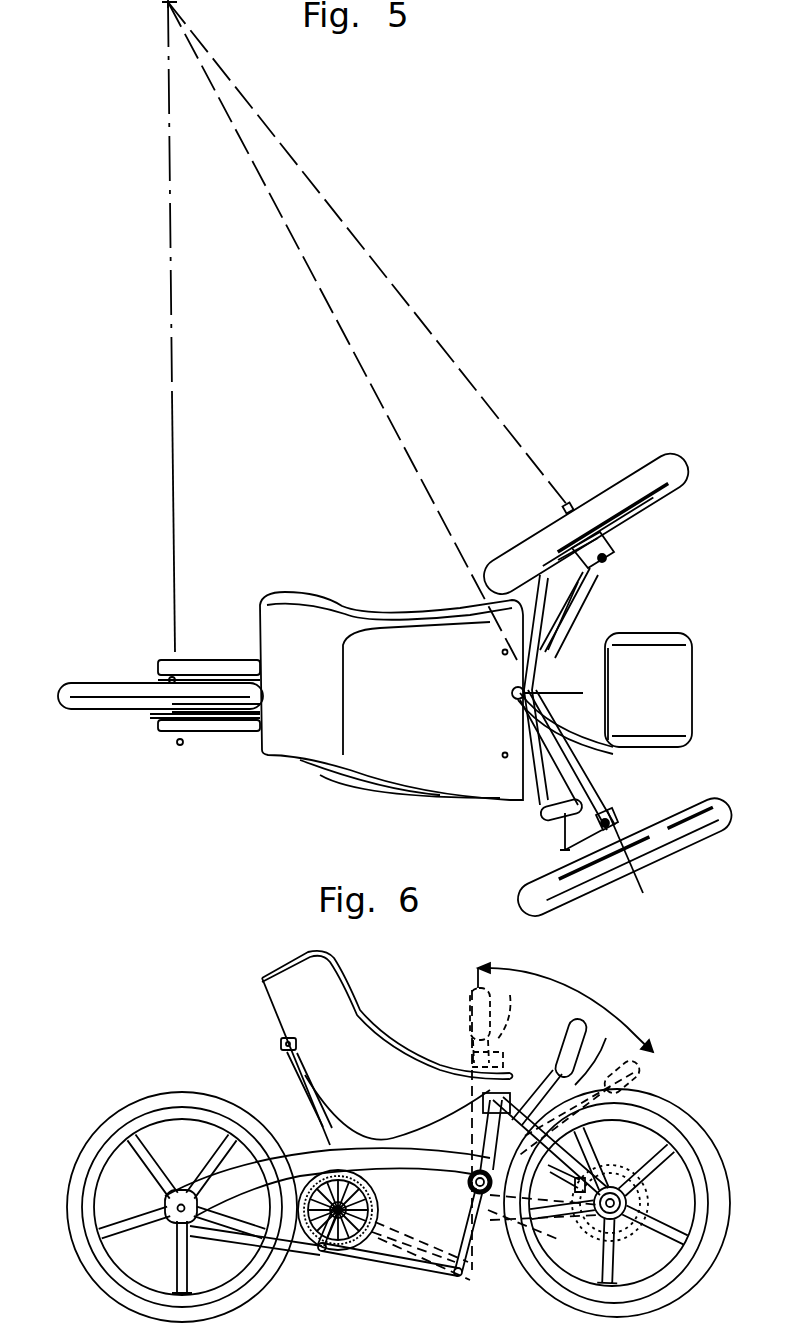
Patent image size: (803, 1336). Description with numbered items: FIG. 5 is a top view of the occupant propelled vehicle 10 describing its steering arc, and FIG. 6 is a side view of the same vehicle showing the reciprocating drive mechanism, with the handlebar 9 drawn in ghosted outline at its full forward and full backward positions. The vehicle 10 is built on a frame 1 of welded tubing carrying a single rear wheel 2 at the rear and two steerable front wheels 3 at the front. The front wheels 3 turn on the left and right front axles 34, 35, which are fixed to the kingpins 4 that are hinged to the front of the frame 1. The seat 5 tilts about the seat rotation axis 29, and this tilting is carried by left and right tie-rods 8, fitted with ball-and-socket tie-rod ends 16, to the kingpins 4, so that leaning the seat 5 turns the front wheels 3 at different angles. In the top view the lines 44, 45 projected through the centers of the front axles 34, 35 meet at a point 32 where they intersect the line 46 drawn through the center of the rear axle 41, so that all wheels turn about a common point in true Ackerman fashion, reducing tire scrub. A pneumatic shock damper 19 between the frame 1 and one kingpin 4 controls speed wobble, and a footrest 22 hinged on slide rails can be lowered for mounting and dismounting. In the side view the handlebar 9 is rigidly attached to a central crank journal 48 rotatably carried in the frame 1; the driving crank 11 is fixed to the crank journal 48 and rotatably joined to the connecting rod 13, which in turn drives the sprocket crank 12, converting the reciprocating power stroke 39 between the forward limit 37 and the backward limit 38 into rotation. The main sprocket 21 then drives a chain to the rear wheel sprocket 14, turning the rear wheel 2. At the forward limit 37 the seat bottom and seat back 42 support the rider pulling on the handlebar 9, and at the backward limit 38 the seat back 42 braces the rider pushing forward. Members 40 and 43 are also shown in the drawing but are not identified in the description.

In FIG. 5, the frame 1 is at (249, 662).
In FIG. 6, the frame 1 is at (315, 1157).
In FIG. 5, the rear wheel 2 is at (110, 688).
In FIG. 6, the rear wheel 2 is at (83, 1253).
In FIG. 5, the front wheels 3 is at (685, 470).
In FIG. 6, the front wheels 3 is at (717, 1163).
In FIG. 5, the kingpins 4 is at (613, 559).
In FIG. 5, the seat 5 is at (307, 595).
In FIG. 6, the seat 5 is at (350, 1012).
In FIG. 5, the tie-rods 8 is at (566, 604).
In FIG. 5, the handlebar 9 is at (541, 822).
In FIG. 6, the handlebar 9 is at (568, 1030).
In FIG. 5, the vehicle 10 is at (320, 522).
In FIG. 6, the vehicle 10 is at (138, 1042).
In FIG. 6, the driving crank 11 is at (465, 1268).
In FIG. 6, the sprocket crank 12 is at (328, 1250).
In FIG. 6, the connecting rod 13 is at (389, 1262).
In FIG. 5, the rear wheel sprocket 14 is at (152, 720).
In FIG. 6, the rear wheel sprocket 14 is at (164, 1213).
In FIG. 5, the tie-rod ends 16 is at (566, 851).
In FIG. 5, the pneumatic shock damper 19 is at (568, 621).
In FIG. 6, the main sprocket 21 is at (368, 1205).
In FIG. 5, the footrest 22 is at (687, 657).
In FIG. 6, the footrest 22 is at (608, 1172).
In FIG. 5, the seat rotation axis 29 is at (553, 693).
In FIG. 5, the point 32 is at (165, 3).
In FIG. 5, the left front axle 34 is at (571, 503).
In FIG. 5, the right front axle 35 is at (641, 884).
In FIG. 6, the forward limit 37 is at (653, 1052).
In FIG. 6, the backward limit 38 is at (487, 1105).
In FIG. 6, the power stroke 39 is at (565, 1010).
In FIG. 6, the chain stay 40 is at (278, 1268).
In FIG. 5, the rear axle 41 is at (182, 746).
In FIG. 6, the rear axle 41 is at (180, 1203).
In FIG. 6, the seat back 42 is at (287, 1023).
In FIG. 6, the seat support member 43 is at (432, 1123).
In FIG. 5, the line 44 is at (172, 393).
In FIG. 5, the line 45 is at (355, 358).
In FIG. 5, the line 46 is at (418, 323).
In FIG. 6, the crank journal 48 is at (477, 1173).